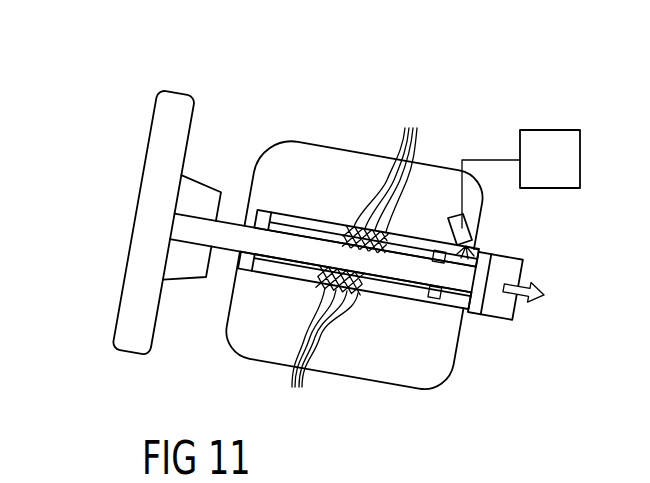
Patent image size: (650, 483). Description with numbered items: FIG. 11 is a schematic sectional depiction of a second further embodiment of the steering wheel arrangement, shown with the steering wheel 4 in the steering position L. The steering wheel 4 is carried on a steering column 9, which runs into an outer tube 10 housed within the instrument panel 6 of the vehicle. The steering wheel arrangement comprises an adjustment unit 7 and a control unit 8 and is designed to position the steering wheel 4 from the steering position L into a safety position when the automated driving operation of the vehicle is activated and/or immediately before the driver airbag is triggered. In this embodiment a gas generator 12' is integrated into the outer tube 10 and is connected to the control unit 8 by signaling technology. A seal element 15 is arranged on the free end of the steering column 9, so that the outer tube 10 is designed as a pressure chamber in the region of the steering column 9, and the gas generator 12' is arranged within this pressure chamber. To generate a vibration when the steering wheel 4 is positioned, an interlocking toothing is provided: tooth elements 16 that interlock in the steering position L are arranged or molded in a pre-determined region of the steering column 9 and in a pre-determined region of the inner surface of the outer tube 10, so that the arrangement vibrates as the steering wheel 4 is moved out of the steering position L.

The steering position L is at (247, 56).
The steering wheel 4 is at (125, 223).
The instrument panel 6 is at (354, 231).
The adjustment unit 7 is at (376, 221).
The control unit 8 is at (521, 179).
The steering column 9 is at (323, 215).
The outer tube 10 is at (495, 332).
The gas generator 12' is at (509, 231).
The seal element 15 is at (546, 279).
The tooth elements 16 is at (357, 262).